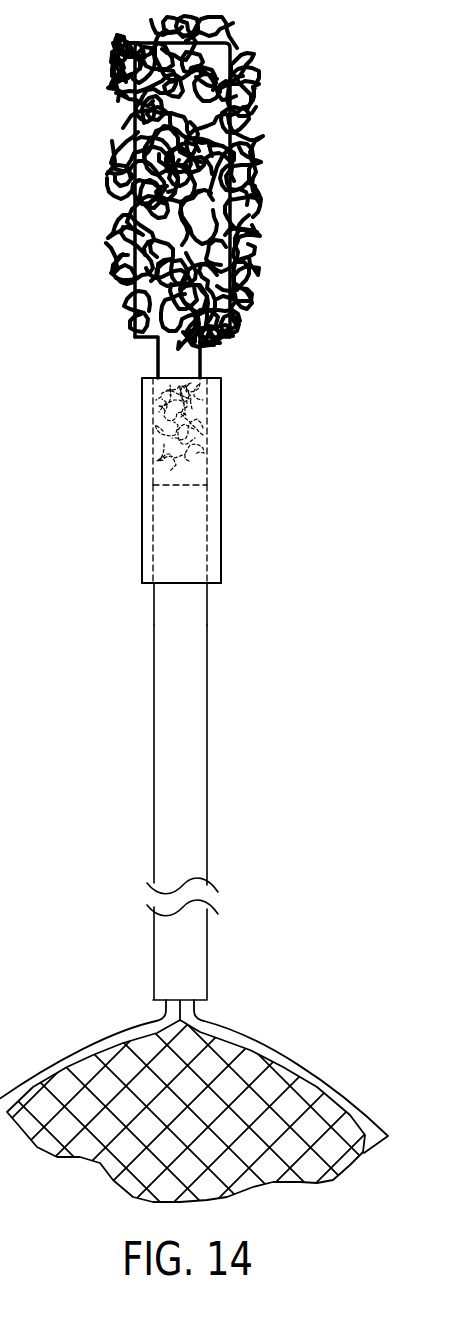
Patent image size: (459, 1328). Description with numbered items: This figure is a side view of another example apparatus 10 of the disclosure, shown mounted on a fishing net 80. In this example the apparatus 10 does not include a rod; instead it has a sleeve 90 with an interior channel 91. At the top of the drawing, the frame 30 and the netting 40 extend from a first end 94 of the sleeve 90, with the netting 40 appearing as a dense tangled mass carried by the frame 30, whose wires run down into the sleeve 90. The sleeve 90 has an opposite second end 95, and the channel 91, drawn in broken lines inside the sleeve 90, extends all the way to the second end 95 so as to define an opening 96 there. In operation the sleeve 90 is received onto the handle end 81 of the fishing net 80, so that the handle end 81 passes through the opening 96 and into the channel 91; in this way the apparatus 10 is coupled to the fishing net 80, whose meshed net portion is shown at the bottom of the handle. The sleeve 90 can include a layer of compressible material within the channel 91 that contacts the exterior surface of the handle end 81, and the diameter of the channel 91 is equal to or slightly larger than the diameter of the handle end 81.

The apparatus 10 is at (229, 613).
The netting 40 is at (260, 143).
The frame 30 is at (257, 331).
The first end 94 is at (234, 393).
The sleeve 90 is at (214, 488).
The interior channel 91 is at (192, 531).
The second end 95 is at (131, 570).
The opening 96 is at (173, 596).
The handle end 81 is at (200, 657).
The fishing net 80 is at (188, 957).